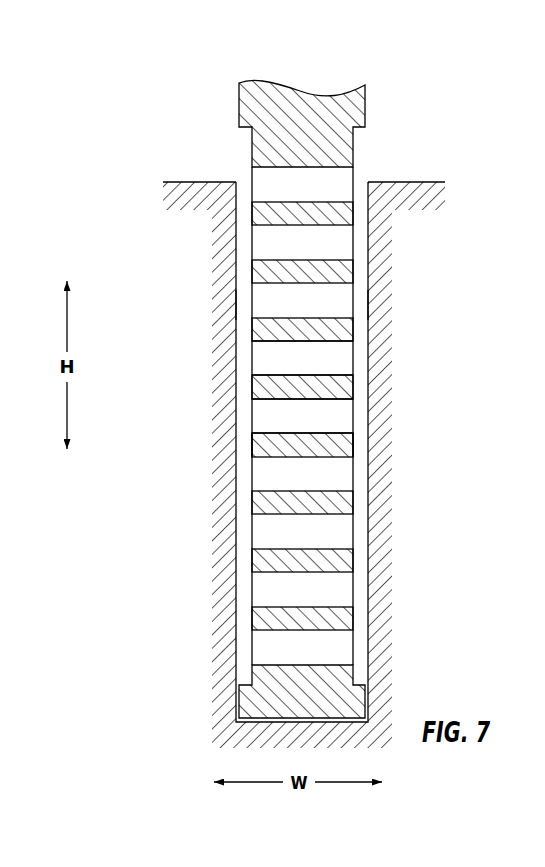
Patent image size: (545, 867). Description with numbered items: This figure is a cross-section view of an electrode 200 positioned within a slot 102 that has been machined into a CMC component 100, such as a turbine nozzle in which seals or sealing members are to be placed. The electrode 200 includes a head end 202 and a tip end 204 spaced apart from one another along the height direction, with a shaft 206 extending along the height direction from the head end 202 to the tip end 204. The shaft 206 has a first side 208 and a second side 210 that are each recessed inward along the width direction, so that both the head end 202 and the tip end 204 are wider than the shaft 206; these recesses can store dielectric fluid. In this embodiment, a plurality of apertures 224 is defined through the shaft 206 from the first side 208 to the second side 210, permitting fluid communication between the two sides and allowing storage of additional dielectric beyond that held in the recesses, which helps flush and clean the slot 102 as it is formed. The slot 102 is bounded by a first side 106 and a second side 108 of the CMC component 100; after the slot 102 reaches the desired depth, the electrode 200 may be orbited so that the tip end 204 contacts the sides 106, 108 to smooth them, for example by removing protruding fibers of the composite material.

The CMC component 100 is at (185, 182).
The slot 102 is at (360, 200).
The first side 106 is at (238, 307).
The second side 108 is at (362, 304).
The electrode 200 is at (305, 376).
The head end 202 is at (353, 111).
The tip end 204 is at (350, 705).
The shaft 206 is at (340, 503).
The first side 208 is at (250, 448).
The second side 210 is at (354, 448).
The apertures 224 is at (328, 357).